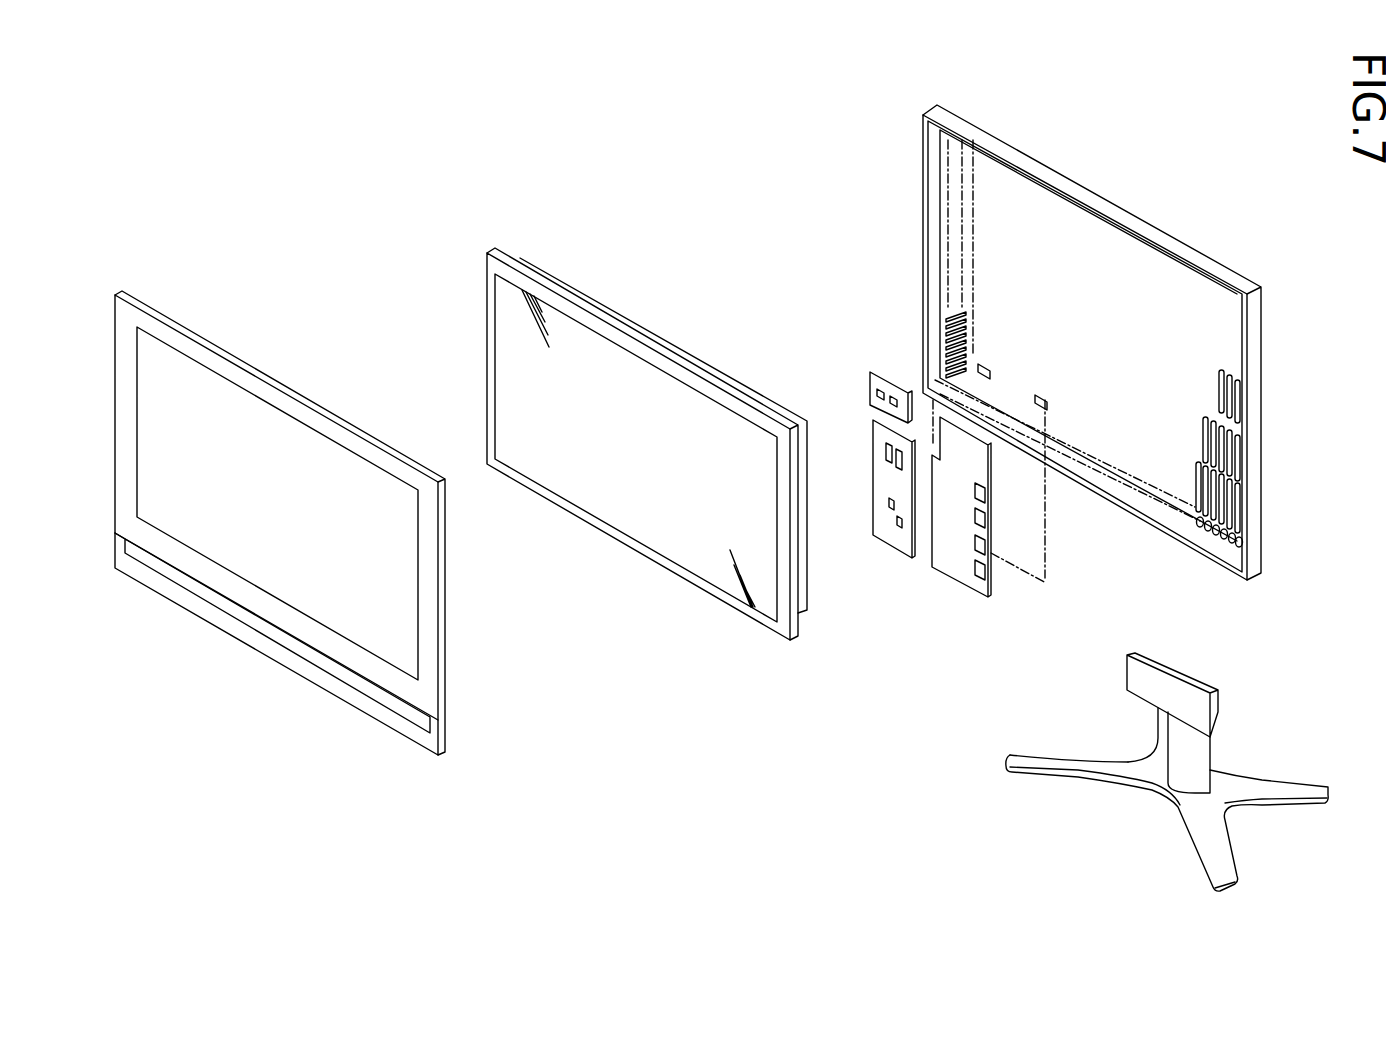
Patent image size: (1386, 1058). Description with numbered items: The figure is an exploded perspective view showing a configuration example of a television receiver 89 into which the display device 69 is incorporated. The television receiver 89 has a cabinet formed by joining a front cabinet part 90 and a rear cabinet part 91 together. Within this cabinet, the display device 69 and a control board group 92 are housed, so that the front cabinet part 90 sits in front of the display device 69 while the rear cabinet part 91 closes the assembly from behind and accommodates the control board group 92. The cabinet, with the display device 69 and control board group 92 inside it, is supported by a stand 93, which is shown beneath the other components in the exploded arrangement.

The television receiver 89 is at (676, 171).
The front cabinet part 90 is at (263, 373).
The display device 69 is at (588, 291).
The rear cabinet part 91 is at (1078, 182).
The control board group 92 is at (850, 367).
The stand 93 is at (1212, 742).